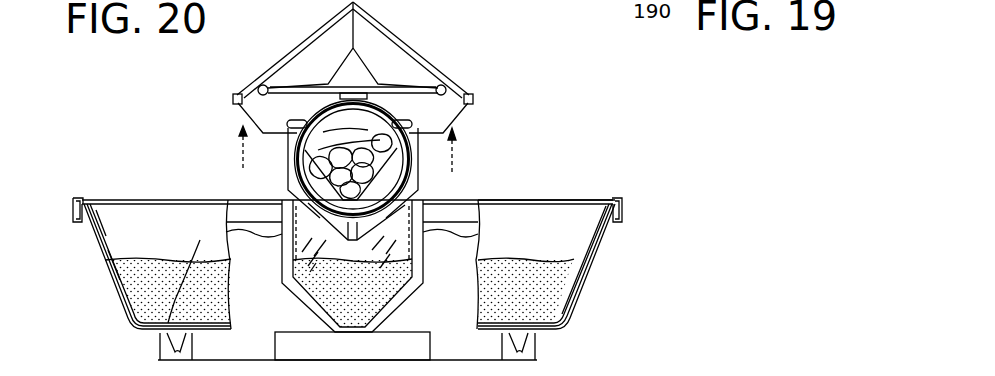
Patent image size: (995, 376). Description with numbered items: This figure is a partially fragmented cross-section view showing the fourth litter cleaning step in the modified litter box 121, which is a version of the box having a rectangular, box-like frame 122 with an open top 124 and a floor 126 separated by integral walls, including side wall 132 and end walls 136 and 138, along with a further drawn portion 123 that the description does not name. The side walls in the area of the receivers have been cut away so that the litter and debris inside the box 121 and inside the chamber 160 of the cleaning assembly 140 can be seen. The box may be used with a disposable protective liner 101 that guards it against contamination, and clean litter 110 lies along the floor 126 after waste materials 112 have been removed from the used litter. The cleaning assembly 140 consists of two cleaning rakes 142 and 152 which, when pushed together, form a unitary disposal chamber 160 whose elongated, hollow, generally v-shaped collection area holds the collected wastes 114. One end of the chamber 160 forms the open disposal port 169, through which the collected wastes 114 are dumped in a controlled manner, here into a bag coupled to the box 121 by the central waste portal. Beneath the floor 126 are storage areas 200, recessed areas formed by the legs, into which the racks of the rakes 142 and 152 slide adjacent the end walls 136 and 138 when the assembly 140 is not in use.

The disposable protective liner 101 is at (623, 213).
The clean litter 110 is at (138, 275).
The waste materials 112 is at (330, 168).
The collected wastes 114 is at (297, 172).
The modified litter box 121 is at (106, 300).
The box-like frame 122 is at (452, 202).
The bin rim 123 is at (118, 198).
The open top 124 is at (545, 196).
The floor 126 is at (193, 268).
The side wall 132 is at (593, 208).
The end wall 136 is at (590, 280).
The end wall 138 is at (100, 278).
The cleaning assembly 140 is at (321, 67).
The cleaning rake 142 is at (484, 82).
The cleaning rake 152 is at (232, 70).
The disposal chamber 160 is at (353, 72).
The disposal port 169 is at (348, 137).
The storage areas 200 is at (148, 346).